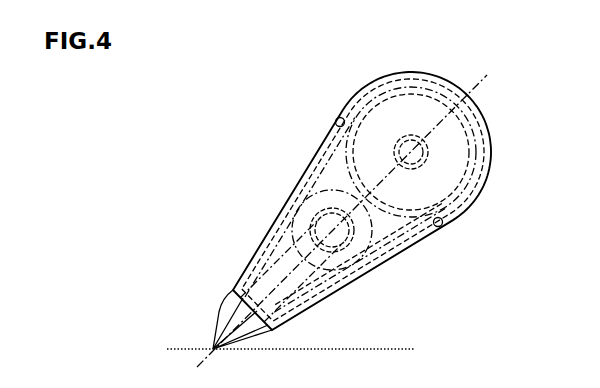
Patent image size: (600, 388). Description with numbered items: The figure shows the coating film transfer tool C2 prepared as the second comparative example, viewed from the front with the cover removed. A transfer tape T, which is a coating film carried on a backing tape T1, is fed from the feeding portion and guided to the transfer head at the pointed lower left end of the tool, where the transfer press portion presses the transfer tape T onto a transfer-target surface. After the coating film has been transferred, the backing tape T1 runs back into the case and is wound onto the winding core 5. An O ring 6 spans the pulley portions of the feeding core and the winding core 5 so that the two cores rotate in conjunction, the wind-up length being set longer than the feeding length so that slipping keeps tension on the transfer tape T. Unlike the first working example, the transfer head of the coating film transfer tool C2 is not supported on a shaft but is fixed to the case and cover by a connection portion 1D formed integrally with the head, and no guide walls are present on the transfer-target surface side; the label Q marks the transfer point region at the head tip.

The coating film transfer tool C2 is at (350, 72).
The O ring 6 is at (335, 170).
The transfer tape T is at (378, 248).
The winding core 5 is at (322, 223).
The backing tape T1 is at (287, 242).
The connection portion 1D is at (272, 268).
The transfer point Q is at (293, 263).